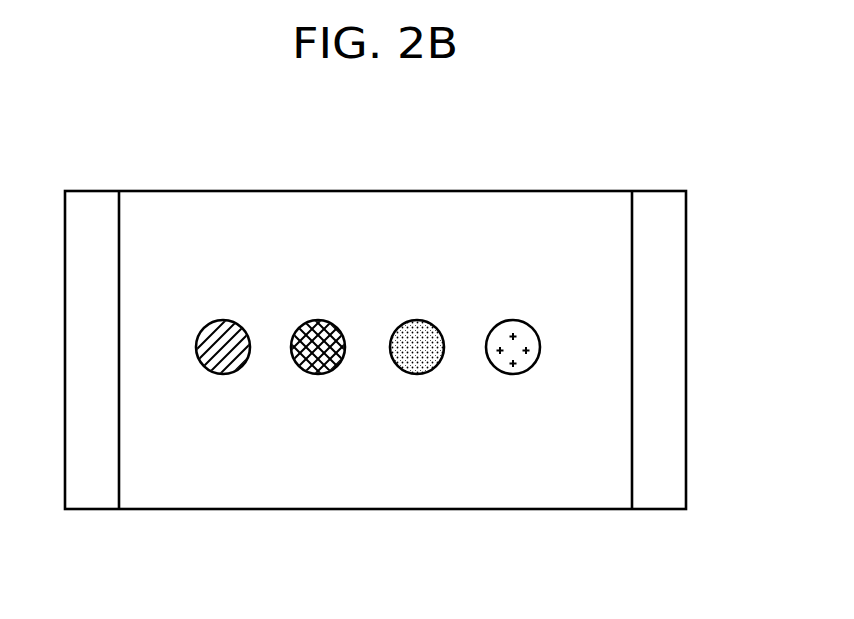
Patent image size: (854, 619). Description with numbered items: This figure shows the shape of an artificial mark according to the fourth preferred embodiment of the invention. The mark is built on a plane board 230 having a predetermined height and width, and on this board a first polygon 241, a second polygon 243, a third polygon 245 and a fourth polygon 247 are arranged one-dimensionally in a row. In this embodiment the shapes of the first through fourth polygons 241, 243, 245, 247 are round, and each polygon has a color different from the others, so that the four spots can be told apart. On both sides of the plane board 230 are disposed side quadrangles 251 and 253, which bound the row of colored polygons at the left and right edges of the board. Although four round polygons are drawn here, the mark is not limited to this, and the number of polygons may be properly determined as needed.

The plane board 230 is at (475, 191).
The side quadrangle 251 is at (93, 205).
The side quadrangle 253 is at (652, 207).
The first polygon 241 is at (223, 375).
The second polygon 243 is at (318, 375).
The third polygon 245 is at (416, 375).
The fourth polygon 247 is at (511, 375).